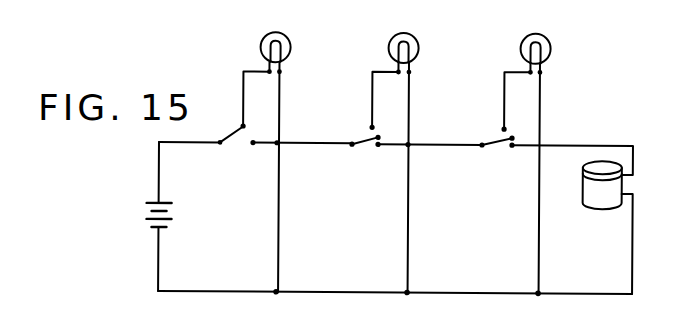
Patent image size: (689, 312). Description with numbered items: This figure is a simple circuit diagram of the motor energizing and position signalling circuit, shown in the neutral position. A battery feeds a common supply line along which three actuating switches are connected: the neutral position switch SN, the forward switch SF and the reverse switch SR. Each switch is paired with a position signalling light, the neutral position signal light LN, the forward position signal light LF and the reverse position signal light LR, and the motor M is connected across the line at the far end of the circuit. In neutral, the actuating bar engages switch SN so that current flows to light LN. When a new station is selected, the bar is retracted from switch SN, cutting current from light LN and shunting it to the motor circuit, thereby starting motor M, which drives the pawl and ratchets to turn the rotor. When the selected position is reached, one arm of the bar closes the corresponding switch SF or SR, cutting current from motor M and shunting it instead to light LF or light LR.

The neutral position signal light LN is at (266, 152).
The forward position signal light LF is at (393, 152).
The reverse position signal light LR is at (525, 152).
The neutral position switch SN is at (237, 145).
The forward switch SF is at (367, 144).
The reverse switch SR is at (500, 147).
The motor M is at (602, 185).